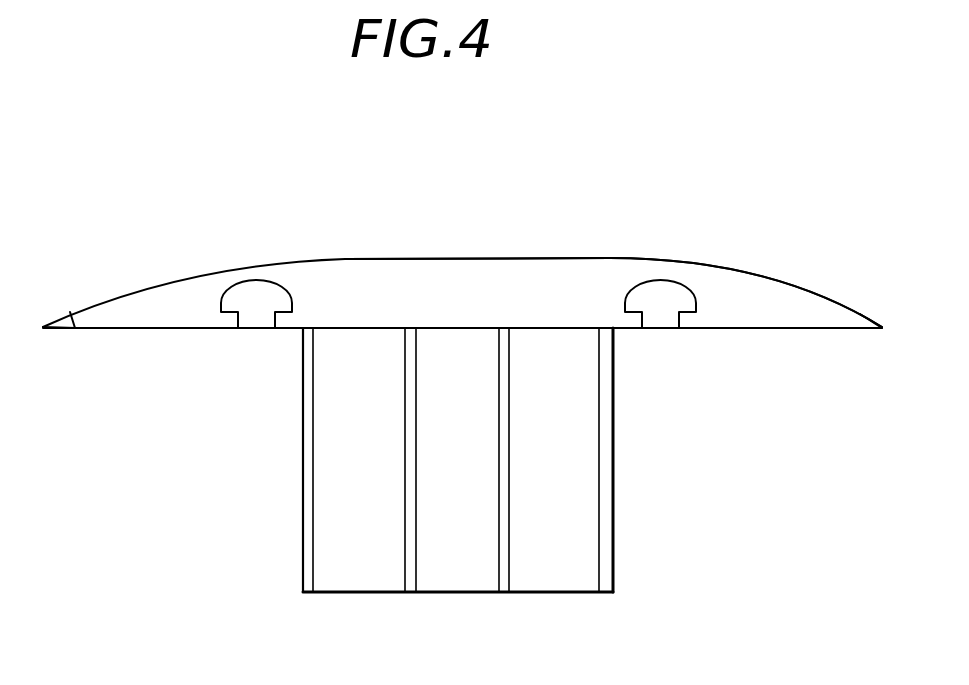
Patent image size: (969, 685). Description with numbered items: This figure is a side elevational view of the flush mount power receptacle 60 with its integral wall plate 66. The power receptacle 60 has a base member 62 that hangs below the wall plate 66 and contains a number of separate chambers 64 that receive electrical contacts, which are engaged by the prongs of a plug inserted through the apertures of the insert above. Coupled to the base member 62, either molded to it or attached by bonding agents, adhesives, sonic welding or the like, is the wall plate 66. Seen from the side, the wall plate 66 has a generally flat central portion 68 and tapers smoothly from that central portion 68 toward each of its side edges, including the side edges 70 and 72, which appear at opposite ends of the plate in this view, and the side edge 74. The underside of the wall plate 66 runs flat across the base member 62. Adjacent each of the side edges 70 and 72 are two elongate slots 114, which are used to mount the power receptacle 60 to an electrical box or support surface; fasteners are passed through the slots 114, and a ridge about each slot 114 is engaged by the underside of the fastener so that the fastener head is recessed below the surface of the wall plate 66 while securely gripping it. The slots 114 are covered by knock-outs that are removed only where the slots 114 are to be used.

The flush mount power receptacle 60 is at (447, 219).
The base member 62 is at (615, 452).
The chambers 64 is at (760, 276).
The wall plate 66 is at (618, 247).
The central portion 68 is at (503, 260).
The side edge 70 is at (883, 323).
The side edge 72 is at (798, 328).
The side edge 74 is at (44, 329).
The elongate slots 114 is at (257, 298).